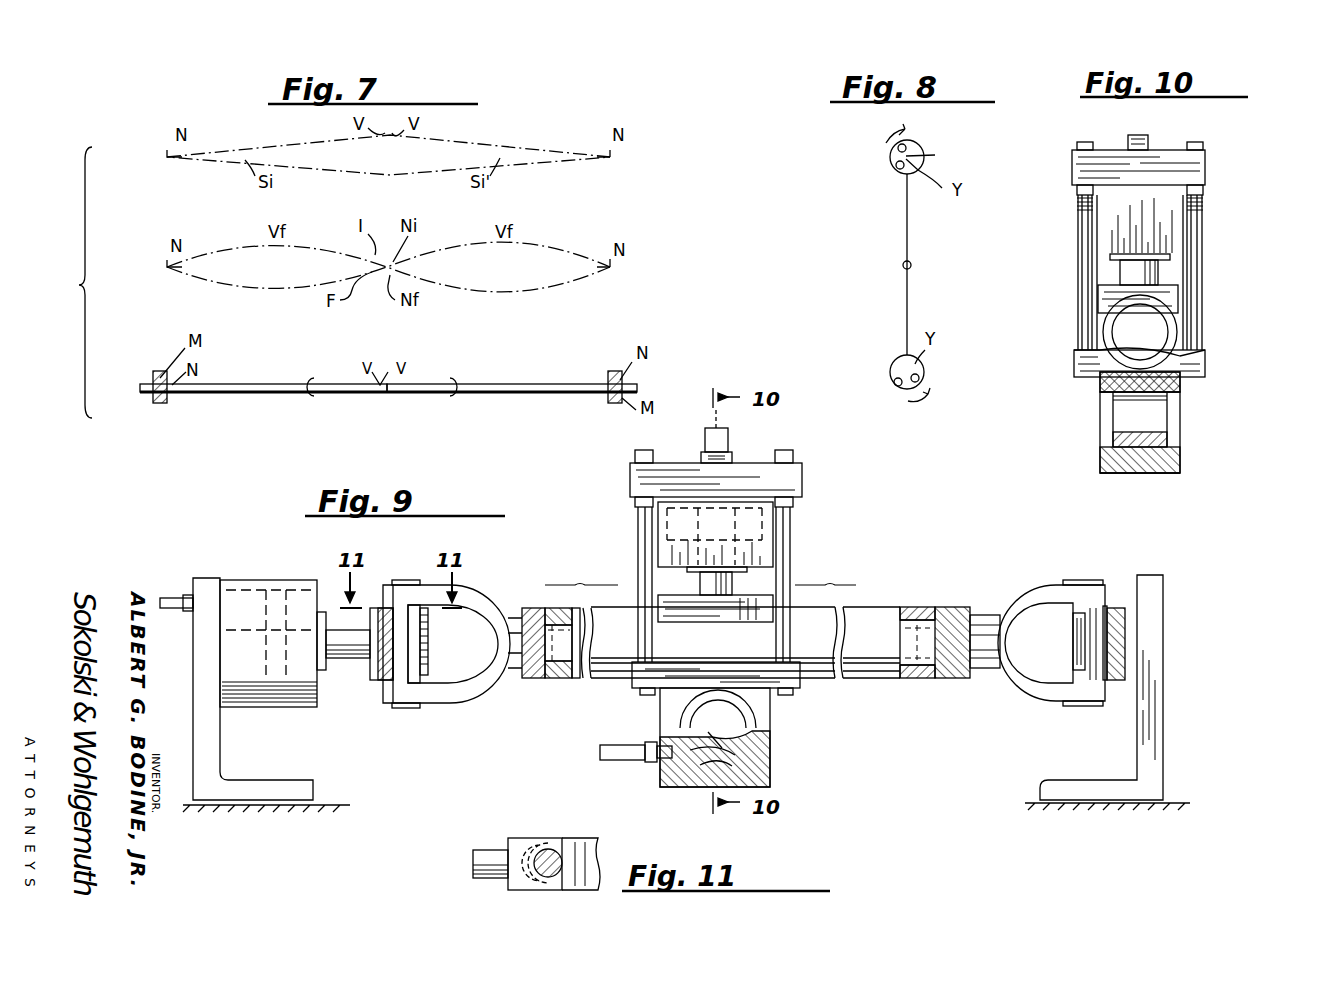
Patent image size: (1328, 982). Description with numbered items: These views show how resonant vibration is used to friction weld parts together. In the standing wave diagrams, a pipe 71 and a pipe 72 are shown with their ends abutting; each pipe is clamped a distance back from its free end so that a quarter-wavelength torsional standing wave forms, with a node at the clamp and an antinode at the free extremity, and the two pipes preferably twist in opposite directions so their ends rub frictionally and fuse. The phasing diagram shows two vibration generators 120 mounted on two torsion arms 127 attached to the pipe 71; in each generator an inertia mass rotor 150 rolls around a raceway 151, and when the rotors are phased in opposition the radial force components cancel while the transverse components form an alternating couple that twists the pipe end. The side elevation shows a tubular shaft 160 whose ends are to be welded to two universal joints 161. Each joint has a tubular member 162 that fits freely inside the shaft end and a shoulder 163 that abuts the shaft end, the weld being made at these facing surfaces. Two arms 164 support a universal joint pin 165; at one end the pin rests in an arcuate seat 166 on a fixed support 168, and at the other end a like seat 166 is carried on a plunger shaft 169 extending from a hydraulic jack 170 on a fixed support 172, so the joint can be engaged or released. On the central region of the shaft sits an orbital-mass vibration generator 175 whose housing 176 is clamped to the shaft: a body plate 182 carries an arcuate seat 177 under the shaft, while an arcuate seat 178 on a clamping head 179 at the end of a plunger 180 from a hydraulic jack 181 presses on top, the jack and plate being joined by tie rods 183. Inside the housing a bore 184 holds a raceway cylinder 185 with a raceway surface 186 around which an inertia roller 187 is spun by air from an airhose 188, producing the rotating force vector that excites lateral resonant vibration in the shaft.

In FIG. 7, the pipe member 71 is at (263, 374).
In FIG. 8, the pipe member 71 is at (935, 261).
In FIG. 7, the pipe 72 is at (512, 372).
In FIG. 8, the vibration generator 120 is at (908, 264).
In FIG. 8, the torsion arm 127 is at (940, 264).
In FIG. 8, the inertia mass rotor 150 is at (939, 253).
In FIG. 8, the raceway 151 is at (873, 275).
In FIG. 10, the tubular shaft 160 is at (1099, 332).
In FIG. 9, the tubular shaft 160 is at (737, 625).
In FIG. 9, the universal joint 161 is at (743, 625).
In FIG. 9, the tubular member 162 is at (754, 663).
In FIG. 9, the shoulder 163 is at (746, 673).
In FIG. 9, the arm 164 is at (1031, 655).
In FIG. 9, the universal joint pin 165 is at (746, 676).
In FIG. 11, the universal joint pin 165 is at (582, 844).
In FIG. 9, the arcuate seat 166 is at (747, 644).
In FIG. 11, the arcuate seat 166 is at (540, 845).
In FIG. 9, the fixed support 168 is at (1112, 676).
In FIG. 9, the plunger shaft 169 is at (348, 688).
In FIG. 11, the plunger shaft 169 is at (493, 840).
In FIG. 9, the hydraulic jack 170 is at (243, 620).
In FIG. 9, the fixed support 172 is at (266, 673).
In FIG. 10, the orbital-mass vibration generator 175 is at (1140, 494).
In FIG. 9, the orbital-mass vibration generator 175 is at (752, 737).
In FIG. 9, the exterior housing 176 is at (752, 757).
In FIG. 10, the arcuate seat 177 is at (1164, 362).
In FIG. 10, the arcuate seat 178 is at (1183, 324).
In FIG. 10, the clamping head 179 is at (1176, 289).
In FIG. 9, the clamping head 179 is at (751, 581).
In FIG. 10, the plunger 180 is at (1182, 263).
In FIG. 9, the plunger 180 is at (663, 569).
In FIG. 10, the hydraulic jack 181 is at (1183, 225).
In FIG. 9, the hydraulic jack 181 is at (676, 534).
In FIG. 10, the body plate 182 is at (1113, 366).
In FIG. 9, the body plate 182 is at (739, 690).
In FIG. 10, the tie rod 183 is at (1166, 272).
In FIG. 9, the tie rod 183 is at (741, 584).
In FIG. 10, the bore 184 is at (1101, 390).
In FIG. 9, the bore 184 is at (679, 711).
In FIG. 10, the raceway cylinder 185 is at (1094, 413).
In FIG. 9, the raceway cylinder 185 is at (669, 765).
In FIG. 10, the raceway surface 186 is at (1101, 452).
In FIG. 10, the inertia roller 187 is at (1168, 432).
In FIG. 9, the inertia roller 187 is at (695, 770).
In FIG. 9, the airhose 188 is at (612, 734).